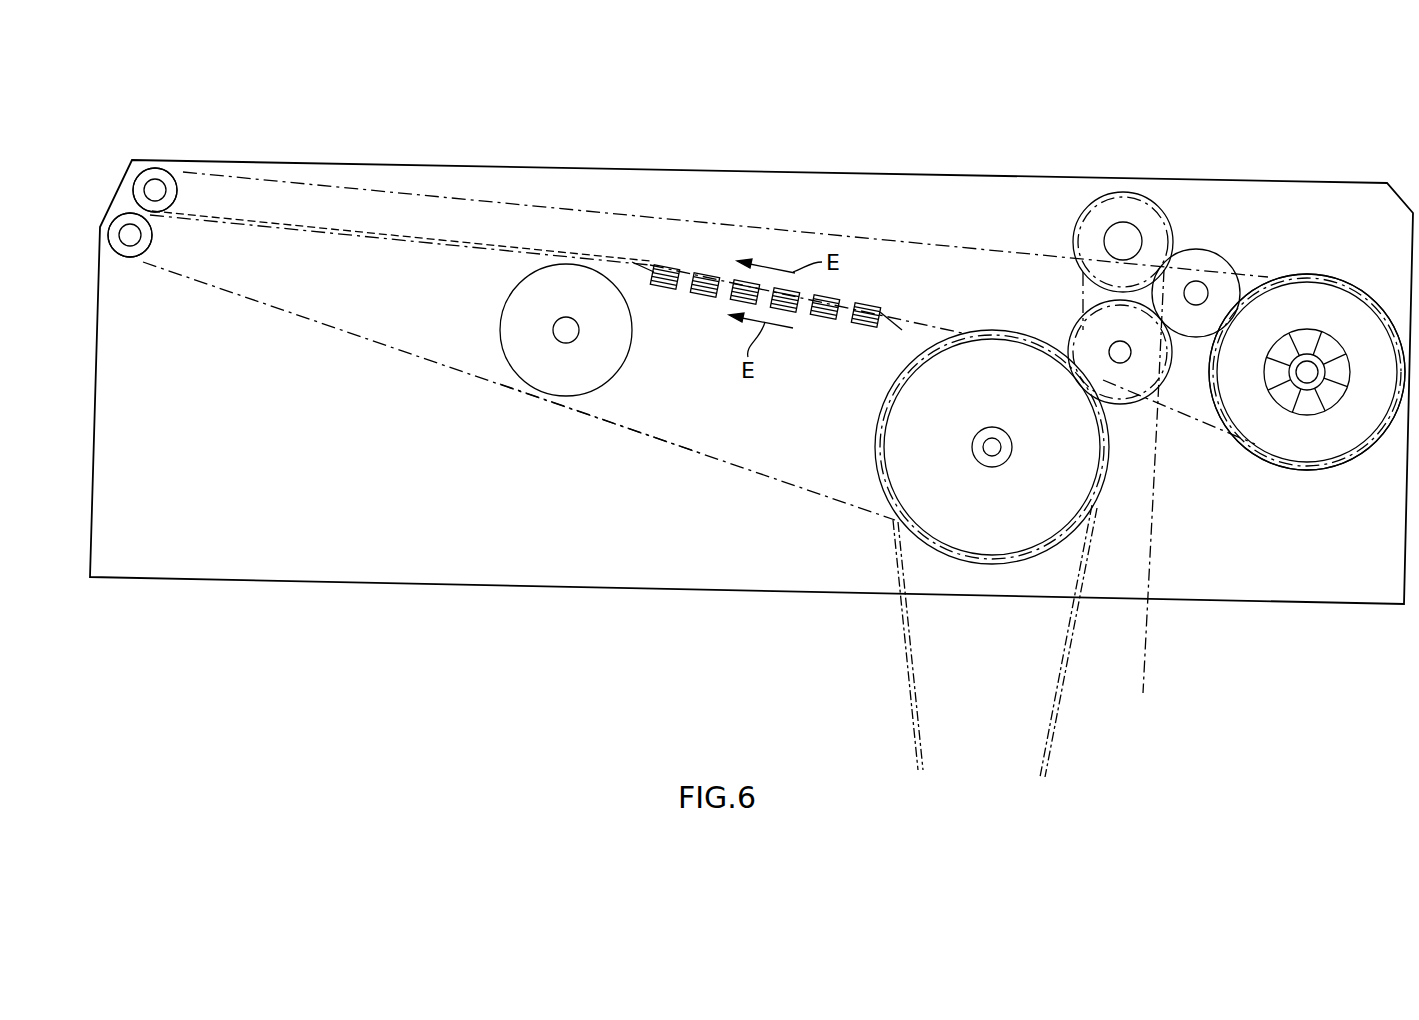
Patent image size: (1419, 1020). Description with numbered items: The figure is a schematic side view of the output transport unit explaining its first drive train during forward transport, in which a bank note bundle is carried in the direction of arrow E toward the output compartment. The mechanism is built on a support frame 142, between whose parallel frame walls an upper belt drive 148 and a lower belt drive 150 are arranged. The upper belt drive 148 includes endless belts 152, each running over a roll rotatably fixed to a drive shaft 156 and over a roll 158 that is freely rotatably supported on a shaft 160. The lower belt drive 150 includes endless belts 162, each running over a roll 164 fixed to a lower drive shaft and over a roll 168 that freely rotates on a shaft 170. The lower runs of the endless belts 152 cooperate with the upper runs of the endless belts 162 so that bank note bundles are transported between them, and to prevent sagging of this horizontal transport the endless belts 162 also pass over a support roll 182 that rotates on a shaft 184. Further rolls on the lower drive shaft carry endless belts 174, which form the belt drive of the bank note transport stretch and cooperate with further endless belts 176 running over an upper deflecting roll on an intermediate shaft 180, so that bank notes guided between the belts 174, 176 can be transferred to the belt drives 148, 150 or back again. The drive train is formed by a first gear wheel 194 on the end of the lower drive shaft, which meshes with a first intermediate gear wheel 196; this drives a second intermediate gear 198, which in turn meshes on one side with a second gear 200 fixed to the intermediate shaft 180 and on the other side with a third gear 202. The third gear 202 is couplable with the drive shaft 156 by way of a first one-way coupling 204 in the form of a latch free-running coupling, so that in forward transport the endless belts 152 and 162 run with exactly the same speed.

The support frame 142 is at (623, 160).
The upper belt drive 148 is at (738, 215).
The lower belt drive 150 is at (635, 448).
The endless belt 152 is at (437, 195).
The drive shaft 156 is at (1300, 448).
The roll 158 is at (170, 178).
The shaft 160 is at (155, 184).
The endless belt 162 is at (320, 330).
The roll 164 is at (890, 418).
The roll 168 is at (150, 234).
The shaft 170 is at (124, 250).
The endless belt 174 is at (905, 670).
The endless belt 176 is at (1145, 648).
The intermediate shaft 180 is at (1117, 235).
The support roll 182 is at (505, 320).
The shaft 184 is at (572, 333).
The first gear wheel 194 is at (898, 447).
The first intermediate gear wheel 196 is at (1100, 322).
The second intermediate gear 198 is at (1210, 268).
The second gear 200 is at (1127, 208).
The third gear 202 is at (1315, 295).
The first one-way coupling 204 is at (1325, 340).